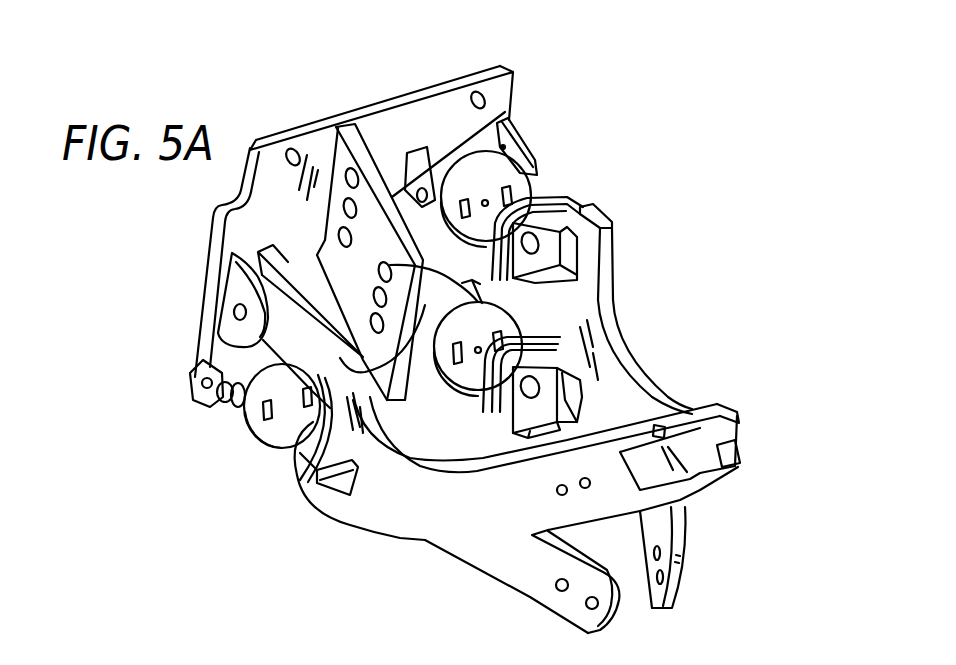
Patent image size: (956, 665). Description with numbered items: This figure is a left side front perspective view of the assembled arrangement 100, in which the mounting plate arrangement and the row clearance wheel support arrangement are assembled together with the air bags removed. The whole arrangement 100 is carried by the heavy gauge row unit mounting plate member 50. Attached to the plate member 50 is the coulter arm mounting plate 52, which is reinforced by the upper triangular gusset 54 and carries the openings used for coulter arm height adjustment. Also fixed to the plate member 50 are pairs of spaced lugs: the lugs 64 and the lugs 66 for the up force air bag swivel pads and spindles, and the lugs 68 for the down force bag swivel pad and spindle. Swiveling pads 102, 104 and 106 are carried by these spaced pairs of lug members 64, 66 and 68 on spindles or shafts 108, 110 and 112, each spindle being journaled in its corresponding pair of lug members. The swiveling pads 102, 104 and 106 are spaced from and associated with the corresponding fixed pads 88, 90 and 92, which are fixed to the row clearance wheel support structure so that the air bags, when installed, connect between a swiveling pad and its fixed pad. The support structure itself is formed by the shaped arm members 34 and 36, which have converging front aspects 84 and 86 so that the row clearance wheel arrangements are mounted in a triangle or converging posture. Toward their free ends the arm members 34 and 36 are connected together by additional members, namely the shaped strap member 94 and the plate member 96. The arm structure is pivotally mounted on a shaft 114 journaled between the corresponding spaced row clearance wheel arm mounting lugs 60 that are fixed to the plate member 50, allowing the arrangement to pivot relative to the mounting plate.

The shaped arm member 34 is at (398, 508).
The shaped arm member 36 is at (600, 310).
The row unit mounting plate member 50 is at (455, 88).
The coulter arm mounting plate 52 is at (352, 118).
The upper triangular gusset 54 is at (388, 132).
The row clearance wheel arm mounting lugs 60 is at (258, 252).
The spaced lugs for up force air bag swivel pad and spindle 64 is at (210, 363).
The spaced lugs for up force air bag swivel pad and spindle 66 is at (380, 270).
The spaced lugs for down force bag swivel pad and spindle 68 is at (500, 127).
The converging front aspect 84 is at (497, 567).
The converging front aspect 86 is at (668, 593).
The fixed pad 88 is at (485, 398).
The fixed pad 90 is at (292, 468).
The fixed pad 92 is at (577, 200).
The shaped strap member 94 is at (718, 440).
The plate member 96 is at (680, 422).
The assembled arrangement 100 is at (643, 195).
The swiveling pad 102 is at (462, 378).
The swiveling pad 104 is at (265, 435).
The swiveling pad 106 is at (503, 180).
The spindle or shaft 108 is at (217, 405).
The spindle or shaft 110 is at (372, 372).
The spindle or shaft 112 is at (545, 160).
The pivot shaft 114 is at (234, 310).